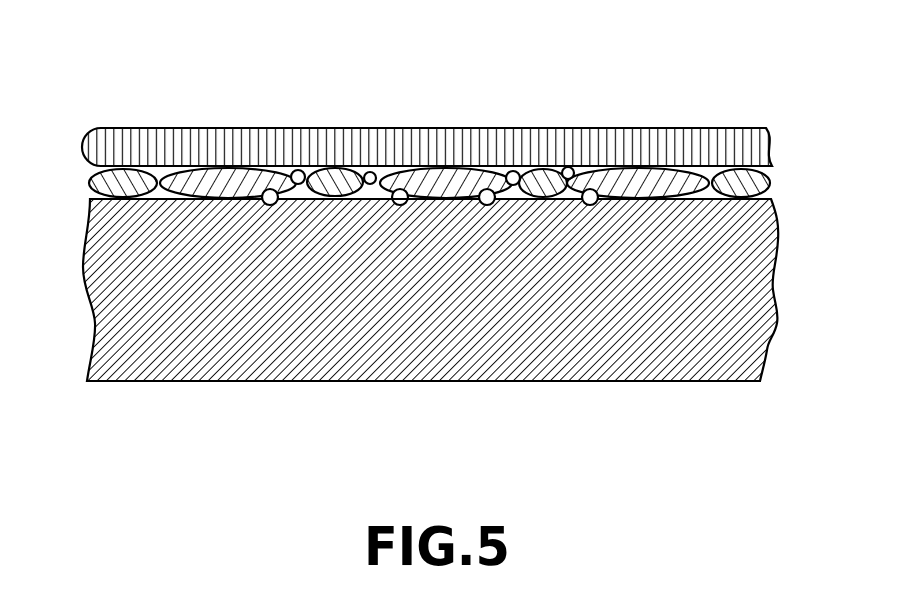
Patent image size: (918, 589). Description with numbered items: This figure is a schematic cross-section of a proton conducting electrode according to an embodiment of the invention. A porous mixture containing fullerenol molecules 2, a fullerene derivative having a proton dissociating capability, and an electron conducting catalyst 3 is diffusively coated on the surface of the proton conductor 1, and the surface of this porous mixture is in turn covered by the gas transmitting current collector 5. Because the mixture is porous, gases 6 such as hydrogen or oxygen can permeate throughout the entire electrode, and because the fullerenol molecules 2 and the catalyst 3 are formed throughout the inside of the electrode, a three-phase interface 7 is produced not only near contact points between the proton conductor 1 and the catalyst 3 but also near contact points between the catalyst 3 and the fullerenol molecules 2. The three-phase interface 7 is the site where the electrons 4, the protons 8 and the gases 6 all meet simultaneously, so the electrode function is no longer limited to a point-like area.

The proton conductor 1 is at (578, 381).
The fullerenol molecules 2 is at (524, 170).
The electron conducting catalyst 3 is at (643, 180).
The electrons 4 is at (396, 176).
The gas transmitting current collector 5 is at (105, 146).
The gases 6 is at (368, 182).
The three-phase interface 7 is at (268, 189).
The protons 8 is at (396, 207).